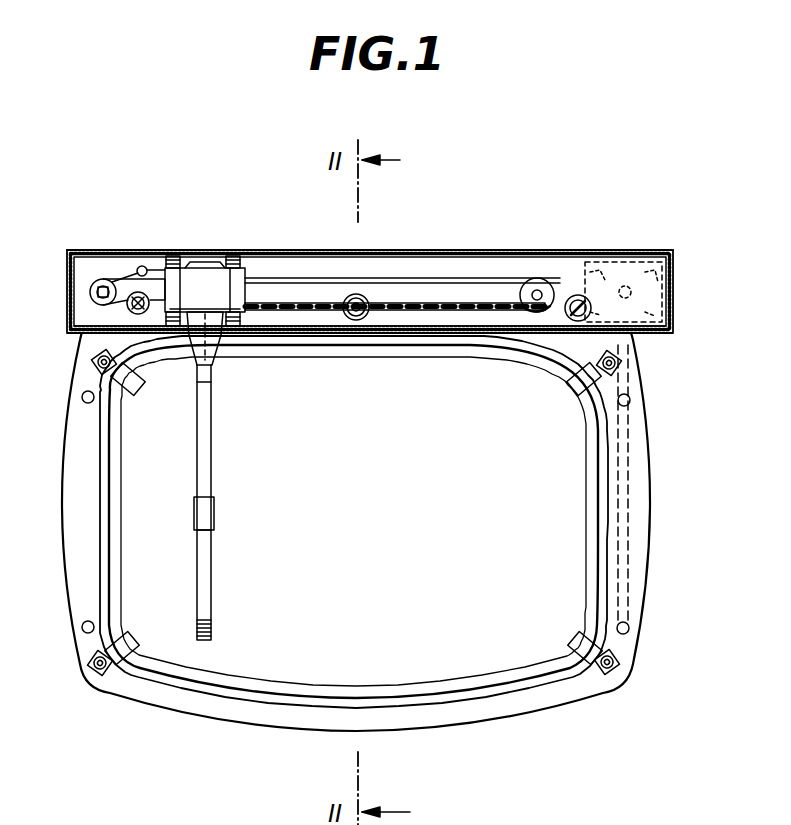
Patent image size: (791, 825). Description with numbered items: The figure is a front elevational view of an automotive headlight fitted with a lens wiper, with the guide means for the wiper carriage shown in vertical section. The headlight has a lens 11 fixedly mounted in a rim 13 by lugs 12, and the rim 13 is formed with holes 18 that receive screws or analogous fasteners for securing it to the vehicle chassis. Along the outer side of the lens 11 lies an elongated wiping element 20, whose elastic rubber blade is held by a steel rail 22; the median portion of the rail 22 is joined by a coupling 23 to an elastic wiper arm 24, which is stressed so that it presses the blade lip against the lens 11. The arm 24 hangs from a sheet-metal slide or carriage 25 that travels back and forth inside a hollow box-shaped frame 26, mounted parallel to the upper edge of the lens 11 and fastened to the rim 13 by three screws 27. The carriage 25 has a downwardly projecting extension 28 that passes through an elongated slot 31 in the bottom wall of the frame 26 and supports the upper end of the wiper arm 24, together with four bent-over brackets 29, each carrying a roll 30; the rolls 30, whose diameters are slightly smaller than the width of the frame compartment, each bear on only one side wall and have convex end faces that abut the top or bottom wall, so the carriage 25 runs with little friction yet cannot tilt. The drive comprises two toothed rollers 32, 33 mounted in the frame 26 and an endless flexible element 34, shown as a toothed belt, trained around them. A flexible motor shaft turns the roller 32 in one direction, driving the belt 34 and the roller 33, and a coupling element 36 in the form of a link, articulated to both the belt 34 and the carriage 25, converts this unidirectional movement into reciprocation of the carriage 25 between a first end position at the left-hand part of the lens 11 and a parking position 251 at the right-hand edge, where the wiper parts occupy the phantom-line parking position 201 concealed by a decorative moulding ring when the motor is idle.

The lens 11 is at (500, 655).
The lugs 12 is at (94, 360).
The rim 13 is at (248, 716).
The holes 18 is at (72, 400).
The wiping element 20 is at (224, 618).
The parking position of the wiping element 201 is at (642, 578).
The rail 22 is at (197, 575).
The coupling 23 is at (228, 502).
The wiper arm 24 is at (200, 466).
The carriage 25 is at (250, 268).
The parking position of the carriage 251 is at (637, 250).
The frame 26 is at (440, 257).
The screws 27 is at (105, 280).
The extension 28 is at (220, 345).
The brackets 29 is at (207, 266).
The rolls 30 is at (173, 256).
The slot 31 is at (421, 335).
The toothed roller 32 is at (90, 291).
The toothed roller 33 is at (535, 278).
The endless flexible element 34 is at (312, 278).
The coupling element 36 is at (156, 258).